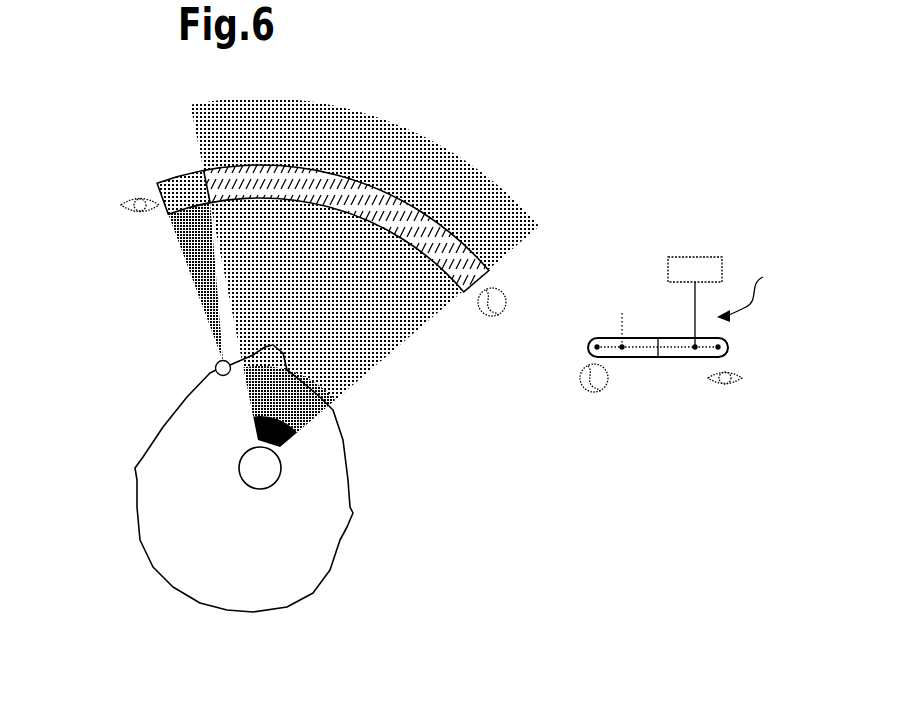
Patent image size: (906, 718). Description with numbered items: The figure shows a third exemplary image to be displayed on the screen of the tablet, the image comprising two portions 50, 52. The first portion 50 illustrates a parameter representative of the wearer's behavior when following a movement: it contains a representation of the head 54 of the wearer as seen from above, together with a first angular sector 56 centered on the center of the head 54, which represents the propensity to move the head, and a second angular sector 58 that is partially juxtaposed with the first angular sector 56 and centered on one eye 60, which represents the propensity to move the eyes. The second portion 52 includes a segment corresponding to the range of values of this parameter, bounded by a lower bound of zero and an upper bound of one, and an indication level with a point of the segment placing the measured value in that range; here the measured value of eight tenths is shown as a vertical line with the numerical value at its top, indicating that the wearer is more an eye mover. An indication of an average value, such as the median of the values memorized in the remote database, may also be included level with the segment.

The first portion 50 is at (138, 338).
The second portion 52 is at (695, 222).
The head 54 is at (160, 533).
The first angular sector 56 is at (387, 343).
The second angular sector 58 is at (193, 283).
The eye 60 is at (215, 370).